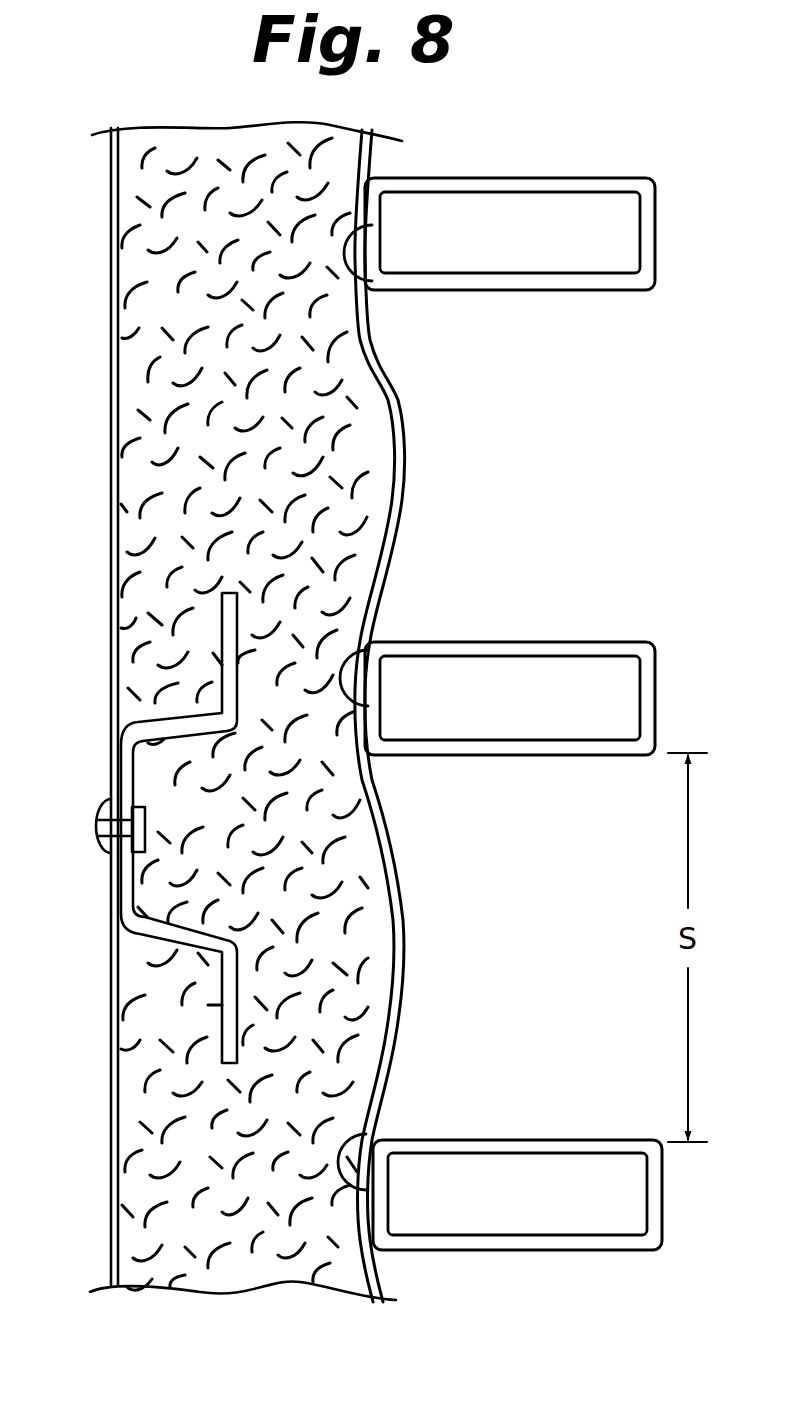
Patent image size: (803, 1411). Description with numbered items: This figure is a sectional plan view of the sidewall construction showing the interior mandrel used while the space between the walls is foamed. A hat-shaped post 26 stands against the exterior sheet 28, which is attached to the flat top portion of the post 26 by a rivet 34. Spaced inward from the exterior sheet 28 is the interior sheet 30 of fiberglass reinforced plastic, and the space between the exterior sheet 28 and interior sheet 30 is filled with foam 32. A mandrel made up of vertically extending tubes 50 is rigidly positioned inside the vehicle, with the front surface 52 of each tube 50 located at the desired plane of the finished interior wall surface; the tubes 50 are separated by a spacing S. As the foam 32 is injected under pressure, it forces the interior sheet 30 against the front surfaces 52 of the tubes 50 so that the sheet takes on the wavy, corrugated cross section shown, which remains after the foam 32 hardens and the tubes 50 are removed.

The post 26 is at (130, 930).
The exterior sheet 28 is at (110, 1040).
The interior sheet 30 is at (400, 922).
The foam 32 is at (168, 522).
The rivet 34 is at (95, 818).
The tube 50 is at (517, 177).
The front surface 52 is at (360, 283).